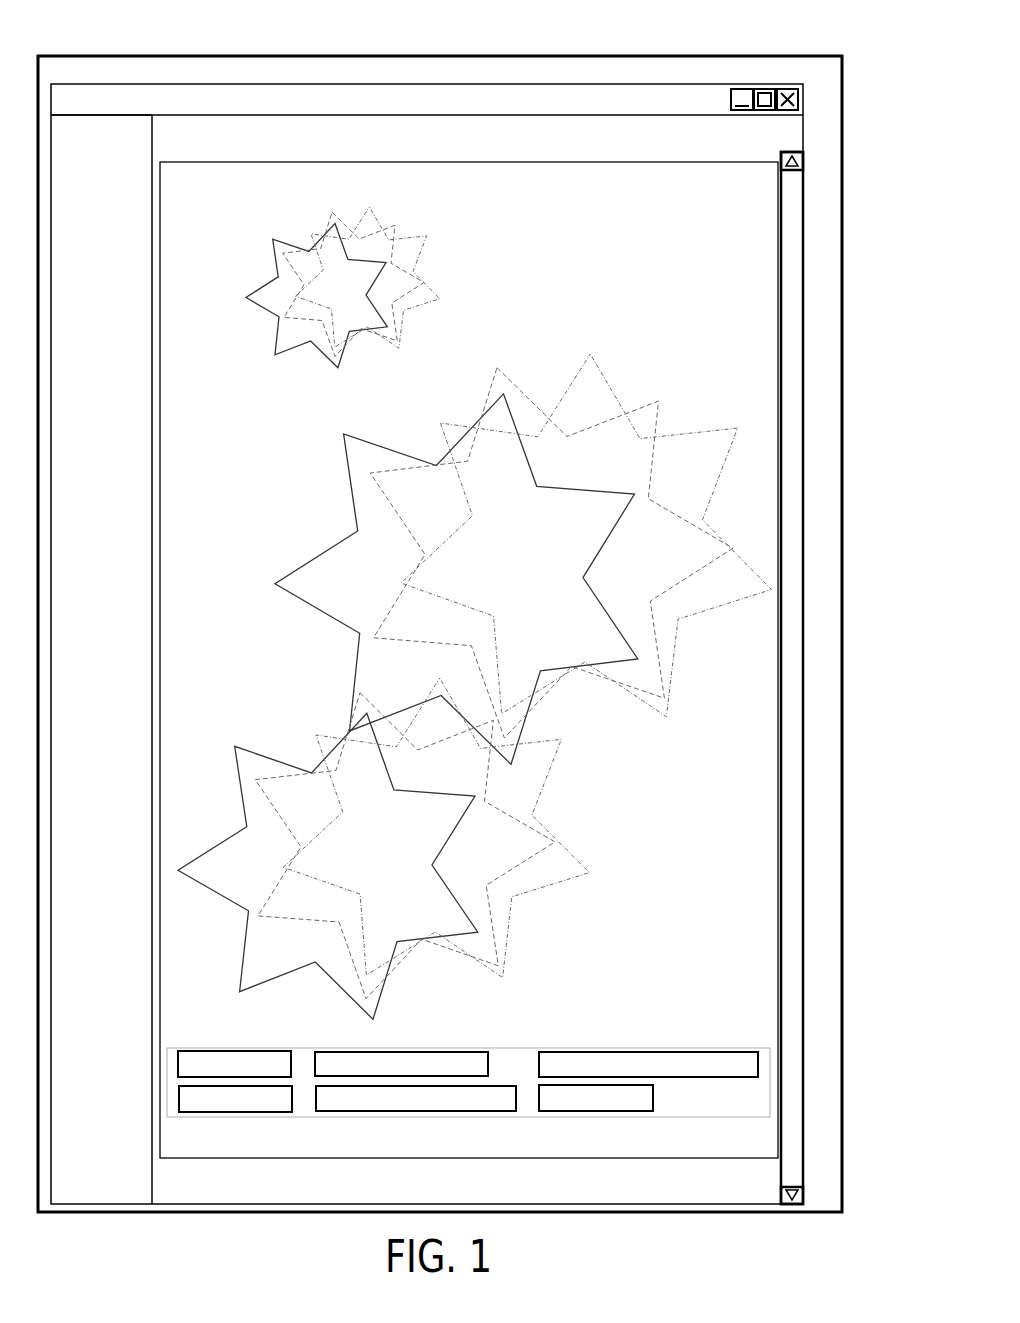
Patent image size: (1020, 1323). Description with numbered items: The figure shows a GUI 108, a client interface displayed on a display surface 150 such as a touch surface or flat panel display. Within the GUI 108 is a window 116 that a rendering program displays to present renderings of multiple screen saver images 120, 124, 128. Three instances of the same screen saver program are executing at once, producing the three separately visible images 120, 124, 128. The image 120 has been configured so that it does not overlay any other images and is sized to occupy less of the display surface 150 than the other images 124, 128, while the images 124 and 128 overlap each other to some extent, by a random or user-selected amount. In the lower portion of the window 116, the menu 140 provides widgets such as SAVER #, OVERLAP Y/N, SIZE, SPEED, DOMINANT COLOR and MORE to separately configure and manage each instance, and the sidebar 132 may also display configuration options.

The display surface 150 is at (594, 55).
The GUI 108 is at (463, 83).
The sidebar 132 is at (69, 126).
The window 116 is at (169, 166).
The screen saver image 120 is at (443, 262).
The screen saver image 124 is at (641, 390).
The screen saver image 128 is at (604, 988).
The menu 140 is at (168, 1049).